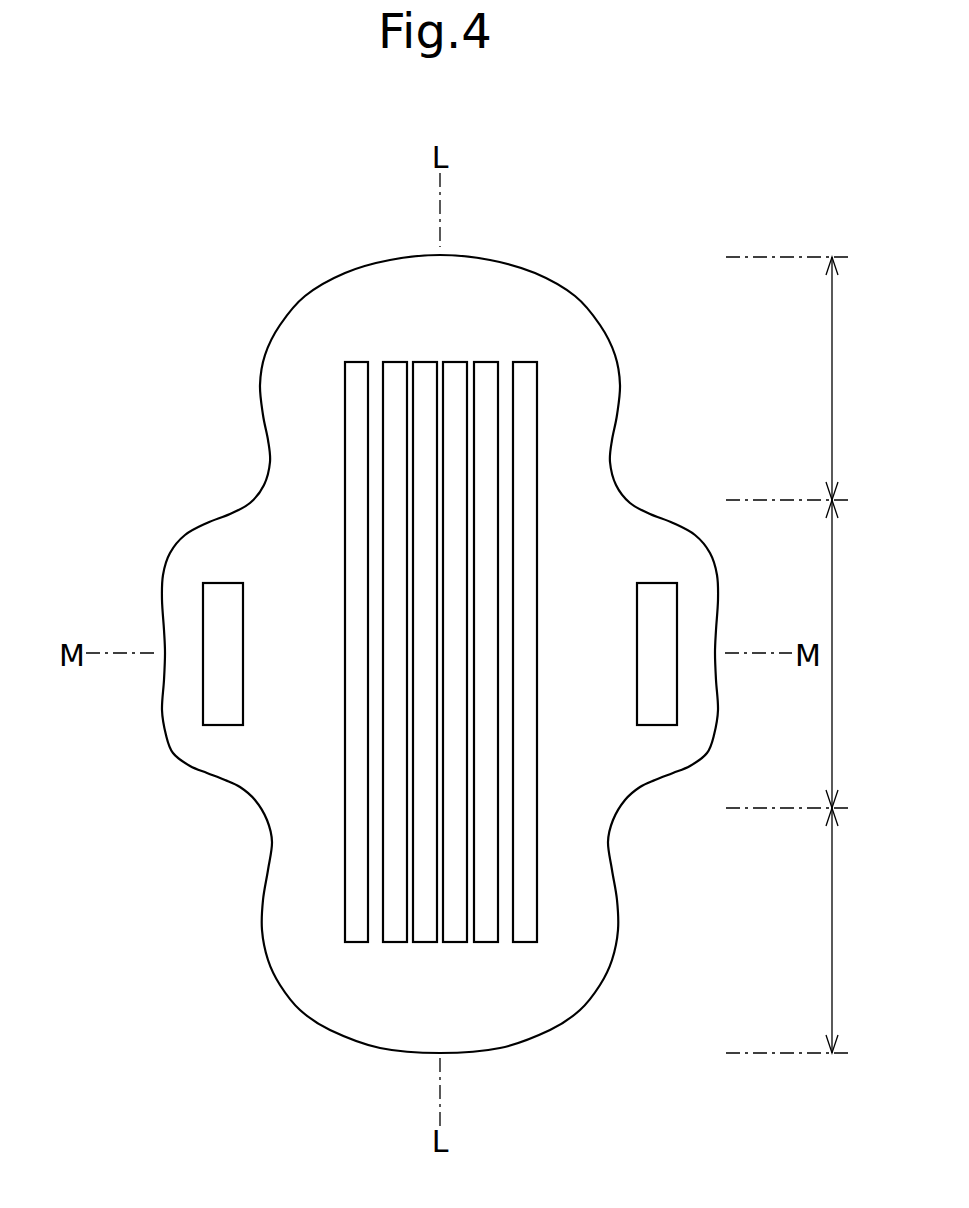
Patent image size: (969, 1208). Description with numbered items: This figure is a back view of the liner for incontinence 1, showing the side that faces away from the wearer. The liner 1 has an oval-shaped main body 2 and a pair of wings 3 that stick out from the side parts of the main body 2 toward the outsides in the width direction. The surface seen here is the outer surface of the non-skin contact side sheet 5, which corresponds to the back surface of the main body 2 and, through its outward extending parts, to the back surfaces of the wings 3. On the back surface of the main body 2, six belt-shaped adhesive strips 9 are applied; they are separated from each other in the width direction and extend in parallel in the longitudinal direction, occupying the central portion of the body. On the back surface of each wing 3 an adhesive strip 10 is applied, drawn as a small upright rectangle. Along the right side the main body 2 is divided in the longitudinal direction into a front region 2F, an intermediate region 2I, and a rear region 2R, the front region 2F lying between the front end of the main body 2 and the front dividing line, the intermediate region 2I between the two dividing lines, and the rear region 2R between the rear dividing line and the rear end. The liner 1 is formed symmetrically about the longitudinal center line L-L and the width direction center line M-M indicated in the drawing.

The liner for incontinence 1 is at (618, 264).
The main body 2 is at (530, 262).
The wings 3 is at (200, 513).
The non-skin contact side sheet 5 is at (307, 980).
The adhesive strips 9 is at (530, 968).
The adhesive strips 10 is at (203, 688).
The front region 2F is at (798, 378).
The intermediate region 2I is at (796, 654).
The rear region 2R is at (799, 930).